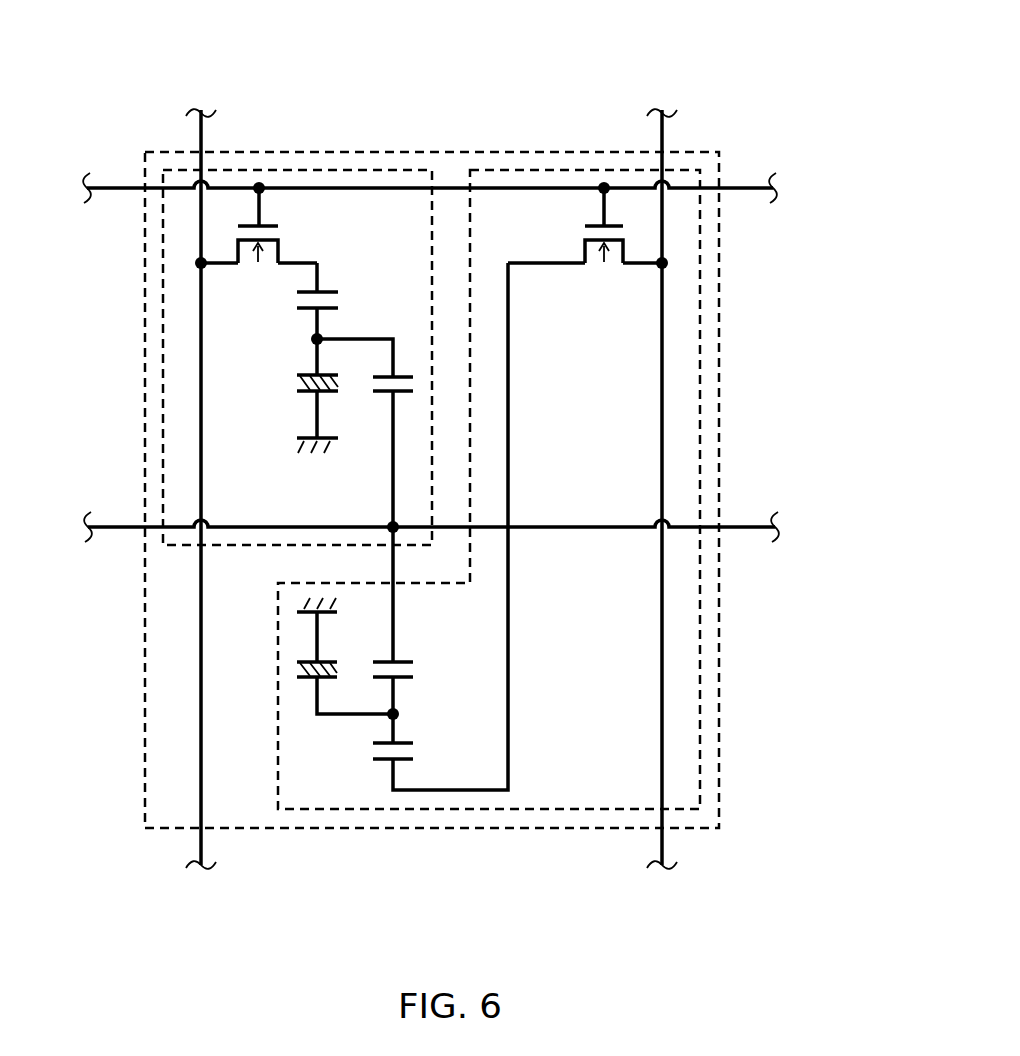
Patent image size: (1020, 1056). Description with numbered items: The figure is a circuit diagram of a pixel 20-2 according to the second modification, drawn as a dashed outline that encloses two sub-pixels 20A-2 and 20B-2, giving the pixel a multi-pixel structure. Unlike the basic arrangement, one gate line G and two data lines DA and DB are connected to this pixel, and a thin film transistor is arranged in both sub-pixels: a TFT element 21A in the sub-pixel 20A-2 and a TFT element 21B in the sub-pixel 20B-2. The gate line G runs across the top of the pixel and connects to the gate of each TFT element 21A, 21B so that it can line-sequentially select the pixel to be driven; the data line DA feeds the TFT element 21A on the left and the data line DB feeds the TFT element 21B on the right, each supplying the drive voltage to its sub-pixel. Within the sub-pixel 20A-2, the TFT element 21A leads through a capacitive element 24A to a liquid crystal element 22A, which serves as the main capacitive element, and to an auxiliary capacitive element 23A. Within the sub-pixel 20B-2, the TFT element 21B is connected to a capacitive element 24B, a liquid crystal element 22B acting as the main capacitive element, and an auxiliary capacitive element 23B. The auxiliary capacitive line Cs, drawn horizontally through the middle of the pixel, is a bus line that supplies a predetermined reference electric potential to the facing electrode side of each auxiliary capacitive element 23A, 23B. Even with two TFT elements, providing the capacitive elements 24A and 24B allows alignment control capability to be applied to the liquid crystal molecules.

The pixel 20-2 is at (437, 828).
The sub-pixel 20A-2 is at (163, 290).
The sub-pixel 20B-2 is at (700, 290).
The TFT element 21A is at (207, 246).
The TFT element 21B is at (657, 245).
The liquid crystal element 22A is at (276, 395).
The liquid crystal element 22B is at (276, 700).
The auxiliary capacitive element 23A is at (442, 390).
The auxiliary capacitive element 23B is at (435, 668).
The capacitive element 24A is at (337, 278).
The capacitive element 24B is at (435, 753).
The data line DA is at (199, 137).
The data line DB is at (660, 137).
The gate line G is at (750, 184).
The auxiliary capacitive line Cs is at (750, 523).